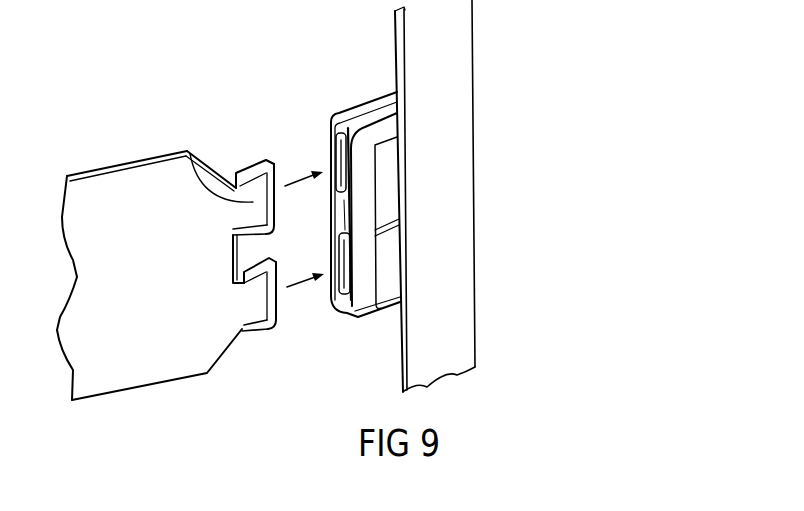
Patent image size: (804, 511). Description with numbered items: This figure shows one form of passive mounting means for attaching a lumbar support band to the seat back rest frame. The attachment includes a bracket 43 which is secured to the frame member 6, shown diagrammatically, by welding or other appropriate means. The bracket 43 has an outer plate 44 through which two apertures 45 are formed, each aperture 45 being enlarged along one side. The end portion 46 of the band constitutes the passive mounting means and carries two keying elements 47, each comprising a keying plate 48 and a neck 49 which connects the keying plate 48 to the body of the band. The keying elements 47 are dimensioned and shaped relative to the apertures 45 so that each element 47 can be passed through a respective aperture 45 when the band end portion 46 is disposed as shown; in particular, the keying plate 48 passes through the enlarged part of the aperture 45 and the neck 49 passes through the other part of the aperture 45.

The primary side member 6 is at (448, 48).
The bracket 43 is at (343, 103).
The outer plate 44 is at (342, 213).
The aperture 45 is at (337, 154).
The end portion 46 is at (115, 198).
The keying element 47 is at (248, 155).
The keying plate 48 is at (273, 168).
The neck 49 is at (187, 152).